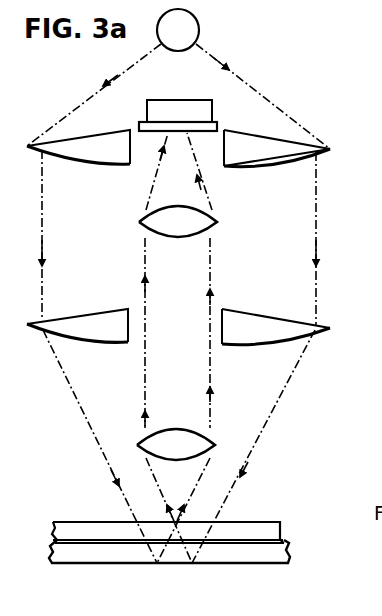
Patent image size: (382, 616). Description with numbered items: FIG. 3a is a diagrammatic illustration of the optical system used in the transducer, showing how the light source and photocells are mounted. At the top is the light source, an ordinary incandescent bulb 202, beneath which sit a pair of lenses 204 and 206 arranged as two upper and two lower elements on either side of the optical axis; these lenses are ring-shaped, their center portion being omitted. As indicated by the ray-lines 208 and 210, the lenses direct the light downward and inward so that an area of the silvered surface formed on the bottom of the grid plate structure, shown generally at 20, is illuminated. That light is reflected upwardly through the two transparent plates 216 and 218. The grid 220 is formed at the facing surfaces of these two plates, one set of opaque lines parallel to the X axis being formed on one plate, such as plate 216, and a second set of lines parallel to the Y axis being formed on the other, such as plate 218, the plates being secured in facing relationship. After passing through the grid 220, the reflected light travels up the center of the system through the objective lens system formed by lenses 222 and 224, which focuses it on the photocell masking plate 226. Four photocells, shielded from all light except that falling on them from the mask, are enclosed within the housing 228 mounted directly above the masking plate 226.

The wafer/workpiece 20 is at (189, 524).
The incandescent bulb 202 is at (199, 32).
The lens 204 is at (246, 167).
The lens 206 is at (244, 310).
The ray-line 208 is at (270, 419).
The ray-line 210 is at (81, 404).
The transparent plate 216 is at (290, 557).
The transparent plate 218 is at (262, 522).
The grid 220 is at (276, 541).
The lens 222 is at (192, 410).
The lens 224 is at (163, 237).
The photocell masking plate 226 is at (217, 128).
The housing 228 is at (158, 100).